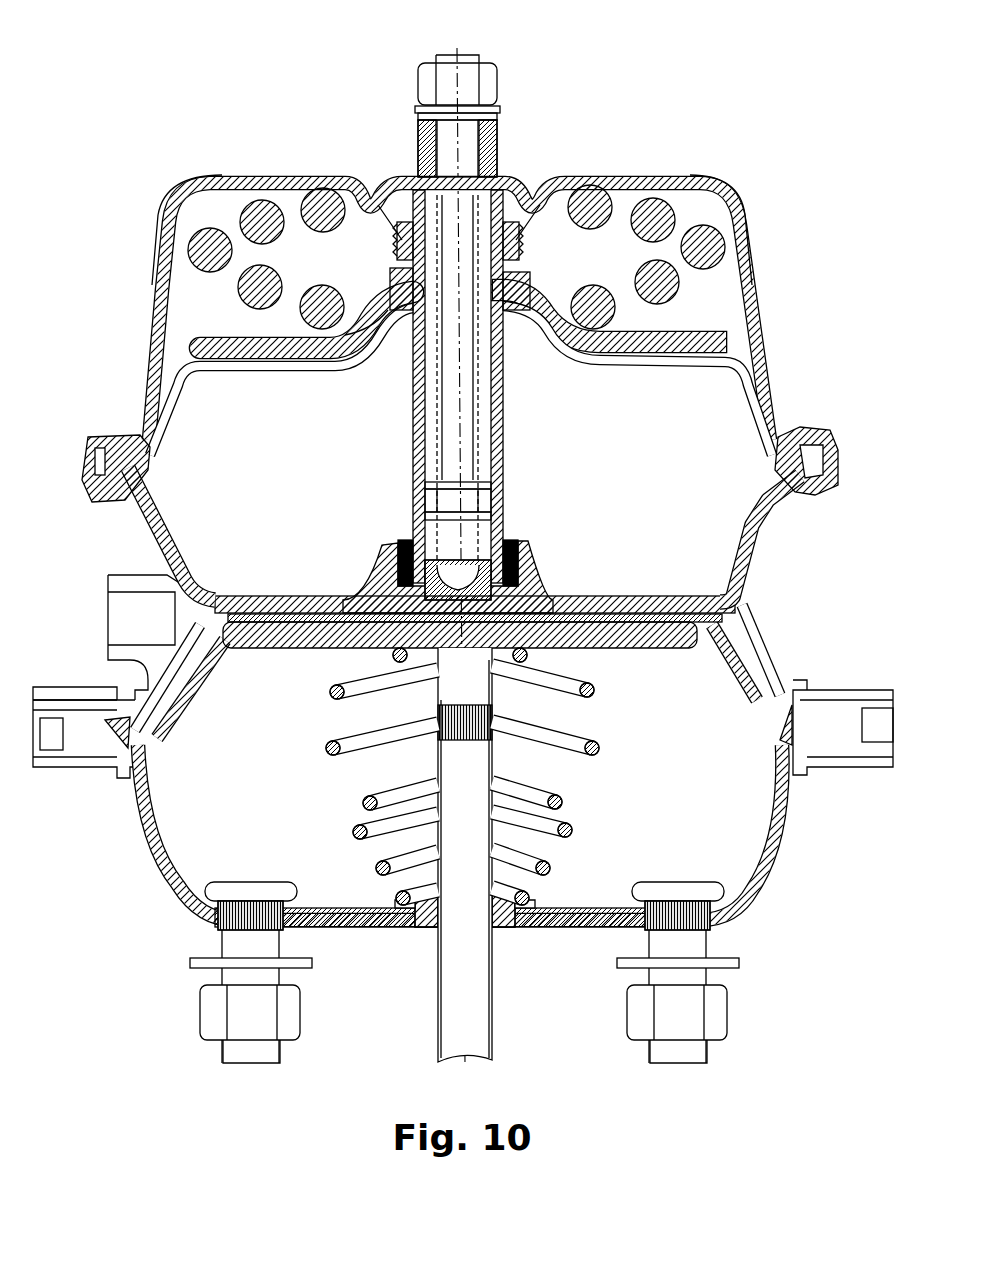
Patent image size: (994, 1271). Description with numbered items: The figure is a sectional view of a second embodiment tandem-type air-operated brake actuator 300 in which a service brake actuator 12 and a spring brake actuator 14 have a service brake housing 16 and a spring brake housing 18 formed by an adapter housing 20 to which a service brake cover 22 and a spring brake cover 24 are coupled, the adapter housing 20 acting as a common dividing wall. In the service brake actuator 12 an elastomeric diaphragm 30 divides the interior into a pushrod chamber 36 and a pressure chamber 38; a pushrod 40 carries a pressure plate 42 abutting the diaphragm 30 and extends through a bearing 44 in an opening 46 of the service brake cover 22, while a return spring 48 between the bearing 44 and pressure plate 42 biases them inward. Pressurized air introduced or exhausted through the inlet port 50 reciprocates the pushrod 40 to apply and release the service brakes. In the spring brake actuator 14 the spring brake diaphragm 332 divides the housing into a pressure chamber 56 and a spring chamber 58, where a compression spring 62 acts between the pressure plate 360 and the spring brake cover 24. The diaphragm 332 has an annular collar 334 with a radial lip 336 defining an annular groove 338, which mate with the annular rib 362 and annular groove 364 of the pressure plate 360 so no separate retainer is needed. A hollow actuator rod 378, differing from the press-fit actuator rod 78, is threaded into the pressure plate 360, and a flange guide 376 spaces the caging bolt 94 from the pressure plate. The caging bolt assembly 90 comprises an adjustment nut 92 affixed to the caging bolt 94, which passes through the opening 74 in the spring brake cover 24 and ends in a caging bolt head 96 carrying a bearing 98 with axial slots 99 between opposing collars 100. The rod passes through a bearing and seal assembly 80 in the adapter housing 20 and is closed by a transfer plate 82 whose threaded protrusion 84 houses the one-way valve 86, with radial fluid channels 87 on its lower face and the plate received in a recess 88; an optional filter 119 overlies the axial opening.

The tandem-type air-operated brake actuator 300 is at (362, 23).
The adjustment nut 92 is at (490, 62).
The caging bolt assembly 90 is at (403, 133).
The compression spring 62 is at (262, 216).
The radial lip 336 is at (400, 245).
The opening 74 is at (492, 167).
The flange guide 376 is at (506, 200).
The spring brake cover 24 is at (683, 178).
The annular collar 334 is at (378, 278).
The annular rib 362 is at (517, 290).
The spring chamber 58 is at (697, 319).
The annular groove 338 is at (405, 314).
The annular groove 364 is at (510, 315).
The pressure plate 360 is at (605, 342).
The diaphragm 332 is at (280, 360).
The hollow actuator rod 378 is at (412, 401).
The caging bolt 94 is at (492, 444).
The hollow actuator rod 78 is at (400, 458).
The axial slots 99 is at (480, 483).
The caging bolt head 96 is at (470, 572).
The collars 100 is at (424, 485).
The bearing 98 is at (426, 504).
The filter 119 is at (500, 585).
The bearing and seal assembly 80 is at (532, 541).
The transfer plate 82 is at (347, 590).
The threaded protrusion 84 is at (554, 588).
The recess 88 is at (553, 603).
The pressure chamber 56 is at (696, 467).
The inlet port 50 is at (120, 630).
The spring brake actuator 14 is at (808, 527).
The spring brake housing 18 is at (776, 552).
The adapter housing 20 is at (750, 626).
The pressure chamber 38 is at (724, 636).
The fluid channels 87 is at (347, 649).
The one-way valve 86 is at (538, 622).
The pressure plate 42 is at (655, 650).
The diaphragm 30 is at (169, 712).
The return spring 48 is at (362, 810).
The pushrod chamber 36 is at (657, 817).
The service brake cover 22 is at (784, 817).
The service brake actuator 12 is at (803, 877).
The service brake housing 16 is at (761, 912).
The bearing 44 is at (423, 930).
The opening 46 is at (525, 927).
The pushrod 40 is at (493, 1005).